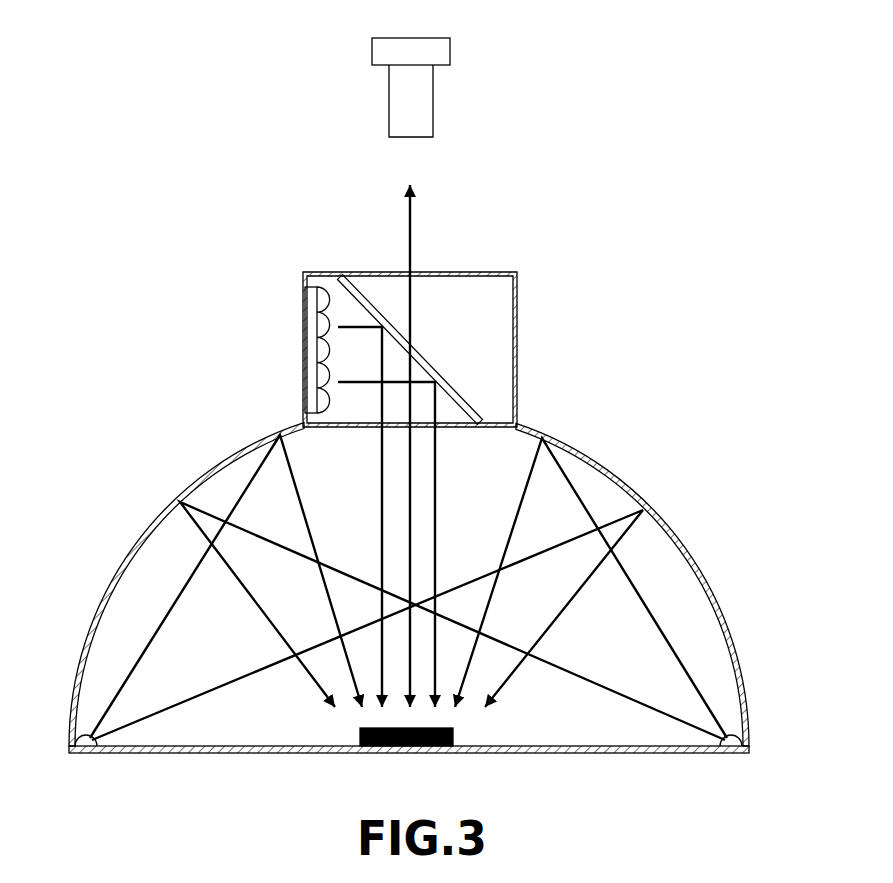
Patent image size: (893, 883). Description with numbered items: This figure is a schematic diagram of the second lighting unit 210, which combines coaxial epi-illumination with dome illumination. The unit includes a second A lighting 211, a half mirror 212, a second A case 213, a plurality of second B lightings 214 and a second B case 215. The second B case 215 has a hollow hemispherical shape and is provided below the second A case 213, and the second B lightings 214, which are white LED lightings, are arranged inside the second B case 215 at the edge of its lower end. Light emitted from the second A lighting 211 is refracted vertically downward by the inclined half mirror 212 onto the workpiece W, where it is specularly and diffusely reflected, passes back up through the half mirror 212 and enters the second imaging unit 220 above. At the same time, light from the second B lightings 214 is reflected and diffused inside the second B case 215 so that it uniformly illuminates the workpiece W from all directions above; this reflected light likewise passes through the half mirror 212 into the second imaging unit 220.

The second lighting unit 210 is at (624, 254).
The second A lighting 211 is at (328, 327).
The half mirror 212 is at (398, 335).
The second A case 213 is at (517, 352).
The second B lighting 214 is at (98, 740).
The second B case 215 is at (645, 512).
The second imaging unit 220 is at (433, 100).
The workpiece W is at (453, 740).